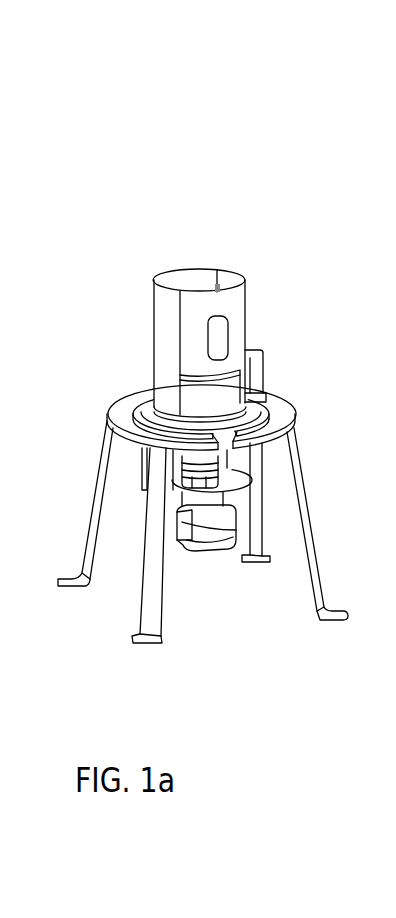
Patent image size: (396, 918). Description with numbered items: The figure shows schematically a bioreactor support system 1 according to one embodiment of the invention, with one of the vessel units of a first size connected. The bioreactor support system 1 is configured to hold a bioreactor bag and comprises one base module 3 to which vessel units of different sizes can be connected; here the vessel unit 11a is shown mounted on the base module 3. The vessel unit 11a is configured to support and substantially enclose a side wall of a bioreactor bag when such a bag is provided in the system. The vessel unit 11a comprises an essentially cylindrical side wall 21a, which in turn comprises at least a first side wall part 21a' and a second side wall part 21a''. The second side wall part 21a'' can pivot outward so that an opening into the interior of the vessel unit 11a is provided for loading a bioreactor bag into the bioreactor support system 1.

The bioreactor support system 1 is at (259, 165).
The base module 3 is at (311, 439).
The side wall 21a is at (199, 310).
The first side wall part 21a' is at (127, 324).
The second side wall part 21a'' is at (251, 254).
The vessel unit 11a is at (259, 332).